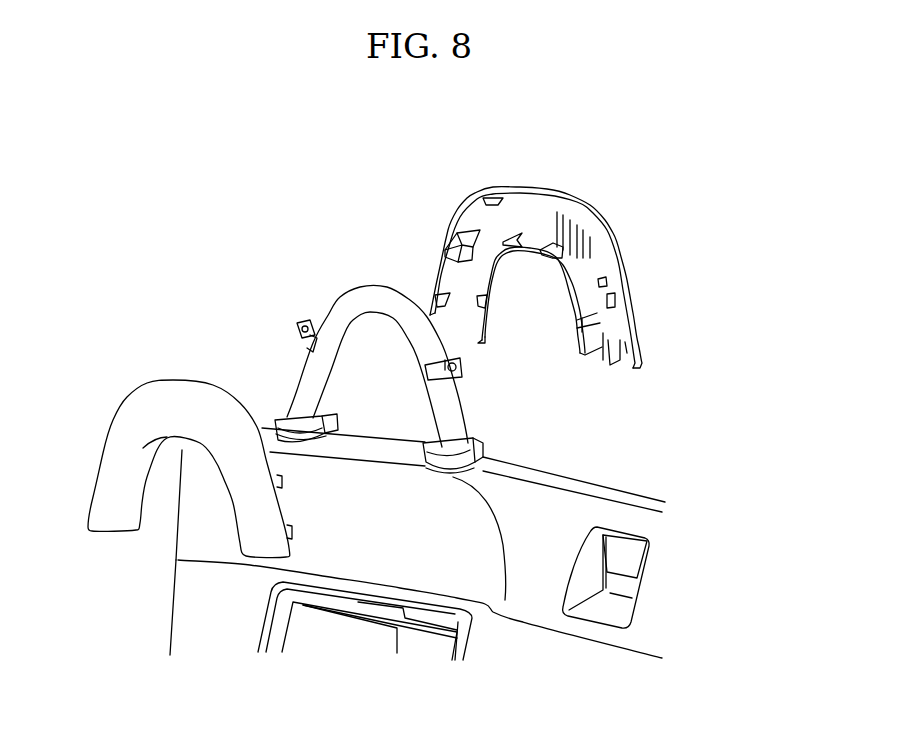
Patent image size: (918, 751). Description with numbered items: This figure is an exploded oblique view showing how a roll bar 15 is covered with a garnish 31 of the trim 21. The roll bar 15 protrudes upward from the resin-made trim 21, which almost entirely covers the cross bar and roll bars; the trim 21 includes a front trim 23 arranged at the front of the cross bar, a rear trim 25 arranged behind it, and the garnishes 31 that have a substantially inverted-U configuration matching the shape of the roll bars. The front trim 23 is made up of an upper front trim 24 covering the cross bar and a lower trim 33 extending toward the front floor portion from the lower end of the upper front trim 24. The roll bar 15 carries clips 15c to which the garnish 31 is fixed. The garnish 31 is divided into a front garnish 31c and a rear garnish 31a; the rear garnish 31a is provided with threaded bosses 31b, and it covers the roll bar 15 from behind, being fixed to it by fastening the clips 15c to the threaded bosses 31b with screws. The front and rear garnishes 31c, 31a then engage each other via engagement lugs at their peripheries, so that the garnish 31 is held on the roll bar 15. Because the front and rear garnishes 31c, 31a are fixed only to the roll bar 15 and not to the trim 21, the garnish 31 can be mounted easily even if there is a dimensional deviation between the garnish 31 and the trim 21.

The roll bar 15 is at (452, 408).
The clip 15c is at (297, 327).
The trim 21 is at (680, 567).
The front trim 23 is at (82, 560).
The upper front trim 24 is at (190, 537).
The rear trim 25 is at (552, 478).
The garnish 31 is at (305, 178).
The rear garnish 31a is at (446, 231).
The threaded boss 31b is at (602, 282).
The front garnish 31c is at (176, 402).
The lower trim 33 is at (193, 597).